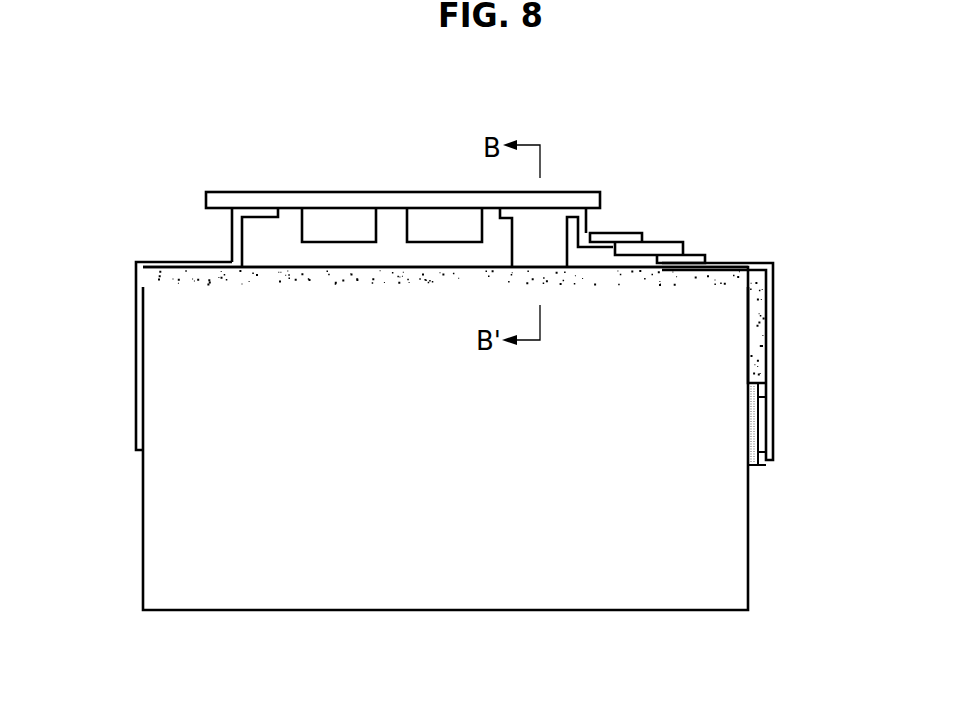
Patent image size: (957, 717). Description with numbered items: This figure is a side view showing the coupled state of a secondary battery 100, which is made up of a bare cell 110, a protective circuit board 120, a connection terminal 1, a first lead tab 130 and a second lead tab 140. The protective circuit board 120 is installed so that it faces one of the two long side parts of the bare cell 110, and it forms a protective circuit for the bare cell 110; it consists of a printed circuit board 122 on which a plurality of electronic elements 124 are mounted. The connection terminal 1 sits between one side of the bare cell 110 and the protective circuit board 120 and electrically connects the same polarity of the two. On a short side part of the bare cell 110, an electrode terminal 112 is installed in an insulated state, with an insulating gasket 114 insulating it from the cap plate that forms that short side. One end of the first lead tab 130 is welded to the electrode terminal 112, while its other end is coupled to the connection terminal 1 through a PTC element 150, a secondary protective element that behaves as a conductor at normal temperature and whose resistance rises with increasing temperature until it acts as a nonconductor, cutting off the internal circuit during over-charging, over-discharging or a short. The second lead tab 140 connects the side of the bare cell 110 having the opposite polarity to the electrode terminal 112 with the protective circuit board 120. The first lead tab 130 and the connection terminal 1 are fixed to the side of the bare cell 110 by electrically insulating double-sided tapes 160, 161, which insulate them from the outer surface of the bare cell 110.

The secondary battery 100 is at (163, 152).
The bare cell 110 is at (748, 562).
The electrode terminal 112 is at (773, 415).
The insulating gasket 114 is at (752, 466).
The protective circuit board 120 is at (290, 192).
The printed circuit board 122 is at (385, 200).
The electronic elements 124 is at (340, 243).
The first lead tab 130 is at (742, 262).
The second lead tab 140 is at (136, 330).
The PTC element 150 is at (668, 243).
The double-sided tape 160 is at (258, 278).
The double-sided tape 161 is at (773, 332).
The connection terminal 1 is at (575, 259).